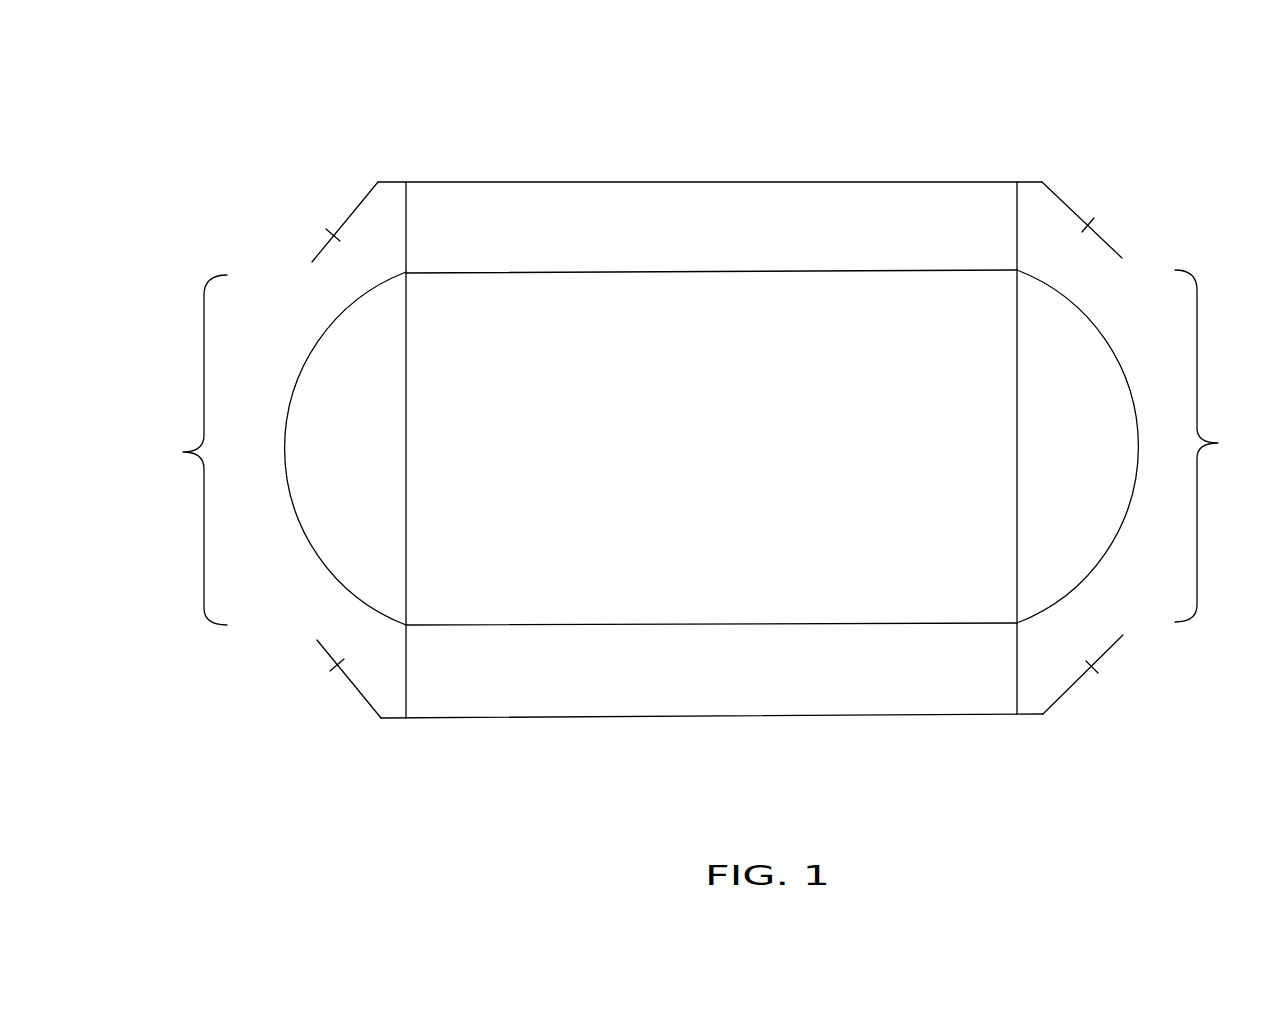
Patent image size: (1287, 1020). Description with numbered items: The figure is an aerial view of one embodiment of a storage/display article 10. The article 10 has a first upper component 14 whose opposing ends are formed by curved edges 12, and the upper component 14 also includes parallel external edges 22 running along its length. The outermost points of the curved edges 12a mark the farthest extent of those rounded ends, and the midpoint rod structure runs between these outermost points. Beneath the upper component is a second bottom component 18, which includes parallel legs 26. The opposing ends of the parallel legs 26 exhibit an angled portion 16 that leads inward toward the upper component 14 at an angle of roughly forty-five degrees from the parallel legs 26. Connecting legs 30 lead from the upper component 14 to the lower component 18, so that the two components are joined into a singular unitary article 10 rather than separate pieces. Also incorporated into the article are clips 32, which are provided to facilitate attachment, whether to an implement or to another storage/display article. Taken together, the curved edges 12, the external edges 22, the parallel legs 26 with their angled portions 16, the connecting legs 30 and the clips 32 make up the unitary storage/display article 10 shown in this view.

The storage/display article 10 is at (328, 202).
The curved edges 12 is at (303, 360).
The outermost points of the curved edges 12a is at (407, 447).
The first upper component 14 is at (186, 450).
The angled portion 16 is at (315, 250).
The second bottom component 18 is at (1216, 446).
The parallel external edges 22 is at (718, 272).
The parallel legs 26 is at (642, 183).
The connecting legs 30 is at (405, 230).
The clips 32 is at (1098, 217).